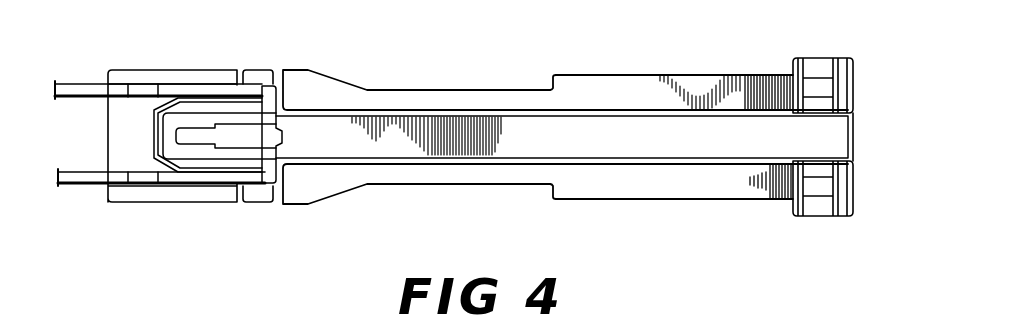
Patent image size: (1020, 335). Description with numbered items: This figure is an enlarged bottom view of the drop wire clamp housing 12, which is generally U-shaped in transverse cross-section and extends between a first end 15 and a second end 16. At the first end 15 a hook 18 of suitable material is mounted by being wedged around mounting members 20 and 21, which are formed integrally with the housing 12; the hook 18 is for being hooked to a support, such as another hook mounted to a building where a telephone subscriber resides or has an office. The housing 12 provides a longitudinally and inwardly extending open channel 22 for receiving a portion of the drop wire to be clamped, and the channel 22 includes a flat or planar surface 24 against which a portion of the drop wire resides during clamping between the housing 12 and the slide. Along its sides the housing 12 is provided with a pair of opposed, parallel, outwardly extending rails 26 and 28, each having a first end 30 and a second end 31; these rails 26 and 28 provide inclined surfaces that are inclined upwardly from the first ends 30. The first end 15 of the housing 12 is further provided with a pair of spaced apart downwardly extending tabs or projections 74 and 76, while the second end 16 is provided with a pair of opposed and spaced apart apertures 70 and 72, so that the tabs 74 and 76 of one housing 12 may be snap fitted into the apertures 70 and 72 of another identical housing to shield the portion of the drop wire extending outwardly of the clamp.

The housing 12 is at (440, 90).
The first end 15 is at (198, 70).
The second end 16 is at (840, 58).
The hook 18 is at (89, 83).
The mounting member 20 is at (242, 111).
The mounting member 21 is at (146, 86).
The open channel 22 is at (408, 146).
The planar surface 24 is at (611, 150).
The rail 26 is at (650, 75).
The rail 28 is at (680, 200).
The first end 30 is at (548, 88).
The second end 31 is at (786, 74).
The aperture 70 is at (817, 88).
The aperture 72 is at (822, 188).
The tab 74 is at (260, 193).
The tab 76 is at (269, 76).